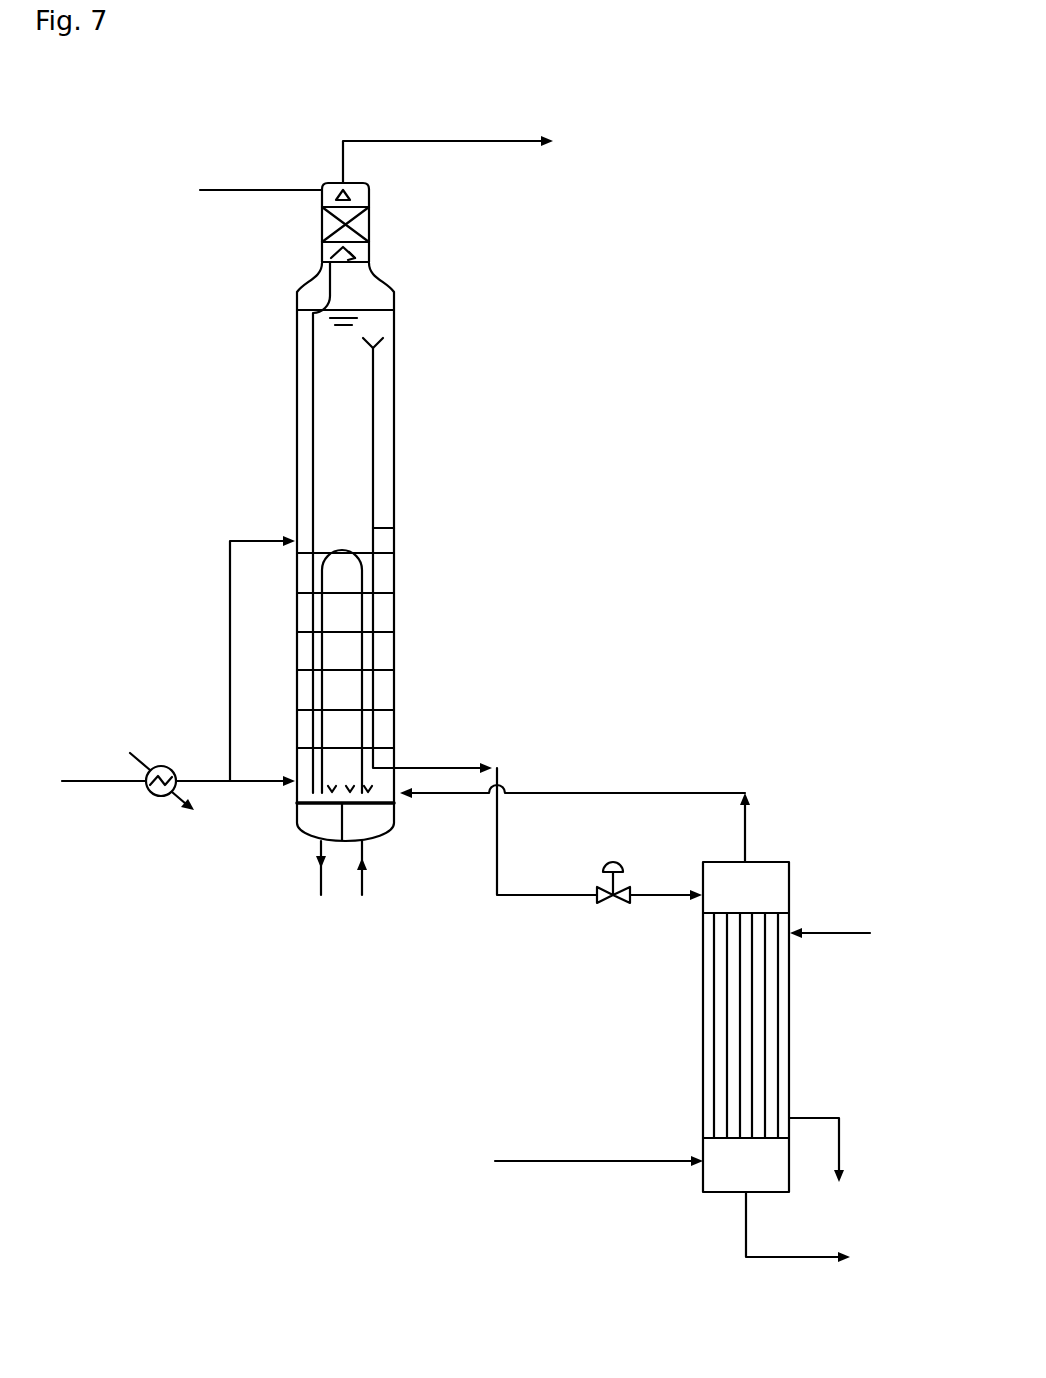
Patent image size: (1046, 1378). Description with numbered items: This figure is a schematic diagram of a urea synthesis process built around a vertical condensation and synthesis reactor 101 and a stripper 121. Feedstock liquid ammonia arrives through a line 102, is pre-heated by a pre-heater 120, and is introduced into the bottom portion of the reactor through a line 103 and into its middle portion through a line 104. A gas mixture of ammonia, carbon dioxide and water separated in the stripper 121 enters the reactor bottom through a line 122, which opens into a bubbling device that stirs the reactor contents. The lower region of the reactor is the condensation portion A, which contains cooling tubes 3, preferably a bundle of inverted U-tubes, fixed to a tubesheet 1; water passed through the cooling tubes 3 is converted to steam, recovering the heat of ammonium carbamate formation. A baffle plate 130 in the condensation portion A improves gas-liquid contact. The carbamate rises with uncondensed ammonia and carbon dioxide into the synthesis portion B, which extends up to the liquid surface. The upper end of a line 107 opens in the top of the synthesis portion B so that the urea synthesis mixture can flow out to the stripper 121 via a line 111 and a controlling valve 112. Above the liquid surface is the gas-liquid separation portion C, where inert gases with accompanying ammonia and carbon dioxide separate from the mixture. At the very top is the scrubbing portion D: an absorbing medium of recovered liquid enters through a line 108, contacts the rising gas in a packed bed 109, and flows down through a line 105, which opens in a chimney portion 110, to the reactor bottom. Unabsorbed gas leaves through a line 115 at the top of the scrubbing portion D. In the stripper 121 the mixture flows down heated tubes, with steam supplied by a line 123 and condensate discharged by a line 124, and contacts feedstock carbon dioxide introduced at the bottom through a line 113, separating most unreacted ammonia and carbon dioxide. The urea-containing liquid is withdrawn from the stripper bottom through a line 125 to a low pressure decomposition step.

The tubesheet 1 is at (397, 804).
The cooling tubes 3 is at (364, 731).
The vertical condensation and synthesis reactor 101 is at (396, 485).
The line 102 is at (208, 785).
The line 103 is at (264, 785).
The line 104 is at (255, 541).
The line 105 is at (309, 446).
The line 107 is at (396, 529).
The line 108 is at (233, 191).
The packed bed 109 is at (371, 241).
The chimney portion 110 is at (371, 261).
The line 111 is at (520, 898).
The controlling valve 112 is at (622, 904).
The line 113 is at (606, 1165).
The line 115 is at (453, 140).
The pre-heater 120 is at (141, 800).
The stripper 121 is at (791, 1022).
The line 122 is at (663, 794).
The line 123 is at (876, 908).
The line 124 is at (885, 1127).
The line 125 is at (796, 1261).
The baffle plate 130 is at (351, 707).
The condensation portion A is at (343, 656).
The synthesis portion B is at (339, 430).
The gas-liquid separation portion C is at (362, 298).
The scrubbing portion D is at (371, 221).